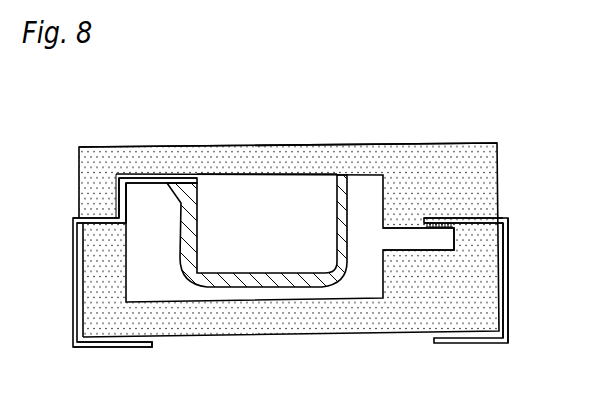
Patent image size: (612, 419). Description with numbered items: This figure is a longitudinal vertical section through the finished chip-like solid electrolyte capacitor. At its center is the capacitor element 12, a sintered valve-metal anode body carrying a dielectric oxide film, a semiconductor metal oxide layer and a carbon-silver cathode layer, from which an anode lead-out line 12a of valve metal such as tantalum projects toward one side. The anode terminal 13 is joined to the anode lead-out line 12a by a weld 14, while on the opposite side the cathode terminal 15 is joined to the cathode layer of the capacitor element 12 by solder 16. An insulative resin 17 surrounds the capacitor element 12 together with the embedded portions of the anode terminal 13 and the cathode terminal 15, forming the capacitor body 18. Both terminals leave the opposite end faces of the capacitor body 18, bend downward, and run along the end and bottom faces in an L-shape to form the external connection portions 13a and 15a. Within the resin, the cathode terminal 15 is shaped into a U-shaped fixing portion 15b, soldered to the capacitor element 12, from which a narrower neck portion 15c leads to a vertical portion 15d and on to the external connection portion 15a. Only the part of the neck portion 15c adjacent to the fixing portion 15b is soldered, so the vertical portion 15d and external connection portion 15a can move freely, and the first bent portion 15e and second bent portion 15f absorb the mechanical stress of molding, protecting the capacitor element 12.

The capacitor element 12 is at (355, 292).
The anode lead-out line 12a is at (430, 245).
The anode terminal 13 is at (509, 292).
The external connection portion 13a is at (509, 261).
The weld 14 is at (429, 217).
The cathode terminal 15 is at (70, 267).
The external connection portion 15a is at (75, 302).
The U-shaped fixing portion 15b is at (273, 187).
The neck portion 15c is at (142, 177).
The vertical portion 15d is at (115, 195).
The first bent portion 15e is at (115, 172).
The second bent portion 15f is at (70, 218).
The solder 16 is at (182, 183).
The insulative resin 17 is at (468, 157).
The capacitor body 18 is at (245, 140).